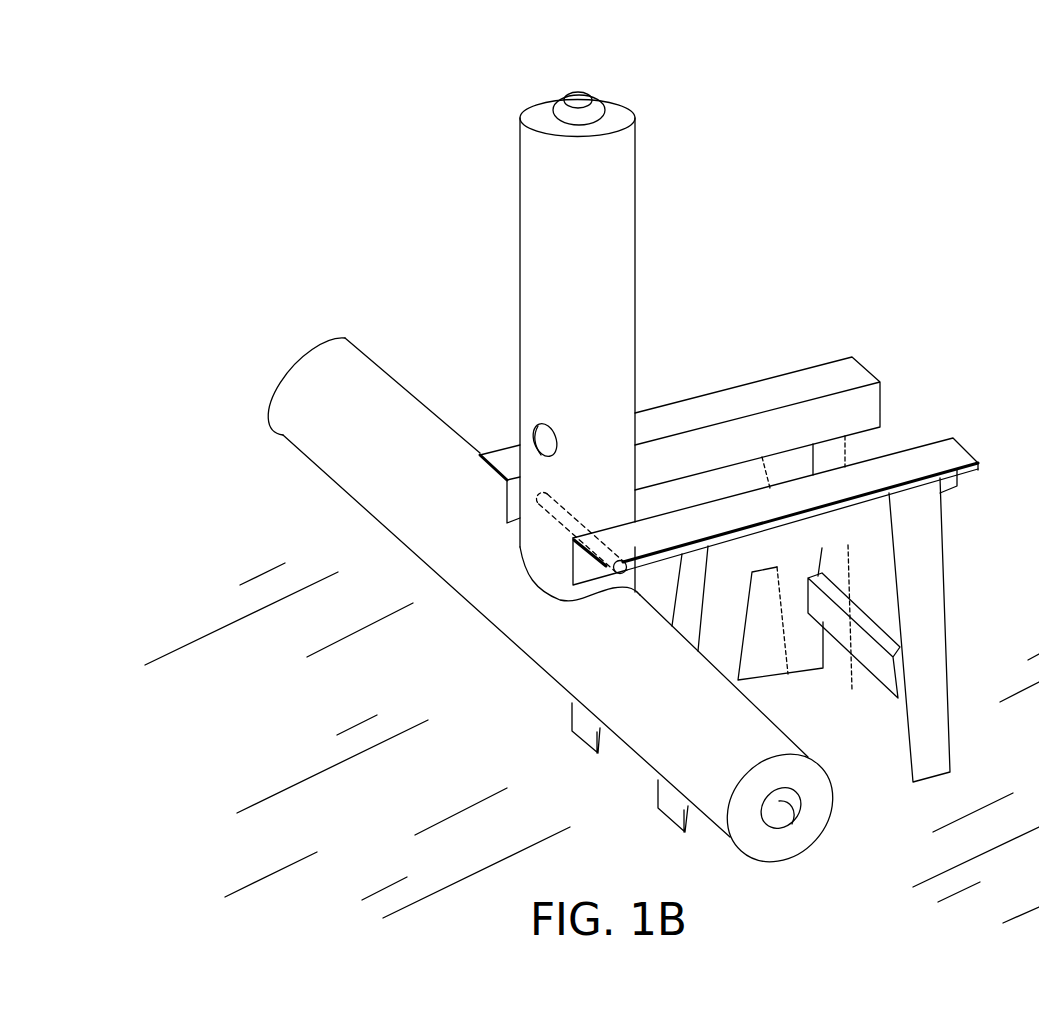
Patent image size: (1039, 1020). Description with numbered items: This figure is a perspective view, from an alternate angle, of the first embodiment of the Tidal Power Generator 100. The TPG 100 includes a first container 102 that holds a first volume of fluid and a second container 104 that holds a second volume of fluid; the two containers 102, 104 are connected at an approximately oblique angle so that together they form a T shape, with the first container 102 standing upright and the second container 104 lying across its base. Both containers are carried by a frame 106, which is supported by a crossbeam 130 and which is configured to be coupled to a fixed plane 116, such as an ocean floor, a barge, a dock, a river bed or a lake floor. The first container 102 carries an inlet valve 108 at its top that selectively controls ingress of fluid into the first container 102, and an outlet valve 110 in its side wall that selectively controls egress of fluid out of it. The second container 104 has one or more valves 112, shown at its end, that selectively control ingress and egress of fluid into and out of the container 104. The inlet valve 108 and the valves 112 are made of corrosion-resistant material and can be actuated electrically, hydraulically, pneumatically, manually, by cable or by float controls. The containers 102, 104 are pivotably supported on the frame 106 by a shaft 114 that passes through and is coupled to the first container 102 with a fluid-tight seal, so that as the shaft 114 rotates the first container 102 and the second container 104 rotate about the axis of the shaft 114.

The Tidal Power Generator 100 is at (377, 247).
The first container 102 is at (527, 250).
The second container 104 is at (327, 433).
The frame 106 is at (935, 402).
The inlet valve 108 is at (620, 98).
The outlet valve 110 is at (535, 425).
The valves 112 is at (797, 862).
The shaft 114 is at (553, 528).
The fixed plane 116 is at (268, 702).
The crossbeam 130 is at (885, 668).